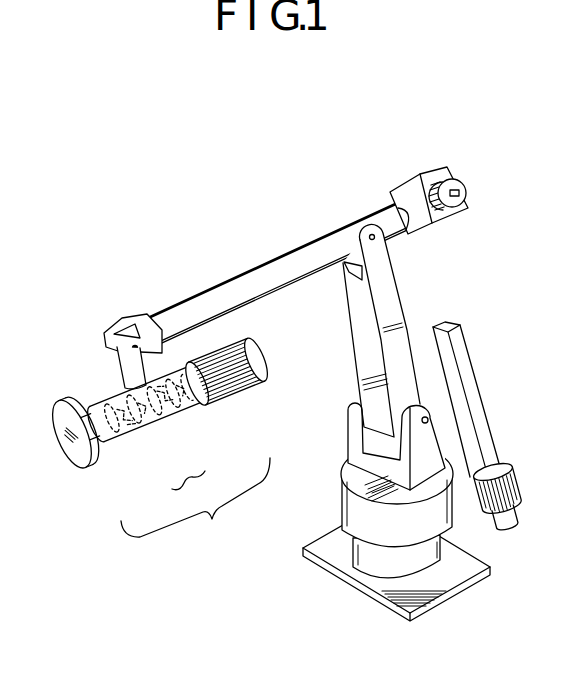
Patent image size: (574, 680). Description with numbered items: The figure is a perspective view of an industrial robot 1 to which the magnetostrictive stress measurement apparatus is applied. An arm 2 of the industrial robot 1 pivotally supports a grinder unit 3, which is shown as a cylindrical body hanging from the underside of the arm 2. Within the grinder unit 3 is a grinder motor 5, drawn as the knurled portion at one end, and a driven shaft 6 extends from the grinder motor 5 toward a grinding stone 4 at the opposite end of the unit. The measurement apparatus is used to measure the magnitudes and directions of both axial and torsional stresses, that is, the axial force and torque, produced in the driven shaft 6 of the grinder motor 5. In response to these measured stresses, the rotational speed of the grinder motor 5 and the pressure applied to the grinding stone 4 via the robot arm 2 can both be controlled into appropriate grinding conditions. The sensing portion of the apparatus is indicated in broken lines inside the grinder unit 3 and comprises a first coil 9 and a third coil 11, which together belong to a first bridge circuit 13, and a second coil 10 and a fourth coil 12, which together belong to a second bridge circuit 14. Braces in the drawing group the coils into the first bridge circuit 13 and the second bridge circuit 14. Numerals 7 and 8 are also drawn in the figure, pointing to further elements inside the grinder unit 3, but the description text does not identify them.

The industrial robot 1 is at (372, 565).
The arm 2 is at (192, 303).
The grinder unit 3 is at (270, 343).
The grinding stone 4 is at (72, 460).
The grinder motor 5 is at (250, 380).
The driven shaft 6 is at (95, 417).
The sensing element 7 is at (197, 411).
The sensing element 8 is at (152, 432).
The first coil 9 is at (178, 420).
The second coil 10 is at (213, 408).
The third coil 11 is at (155, 427).
The fourth coil 12 is at (133, 428).
The first bridge circuit 13 is at (195, 490).
The second bridge circuit 14 is at (195, 502).